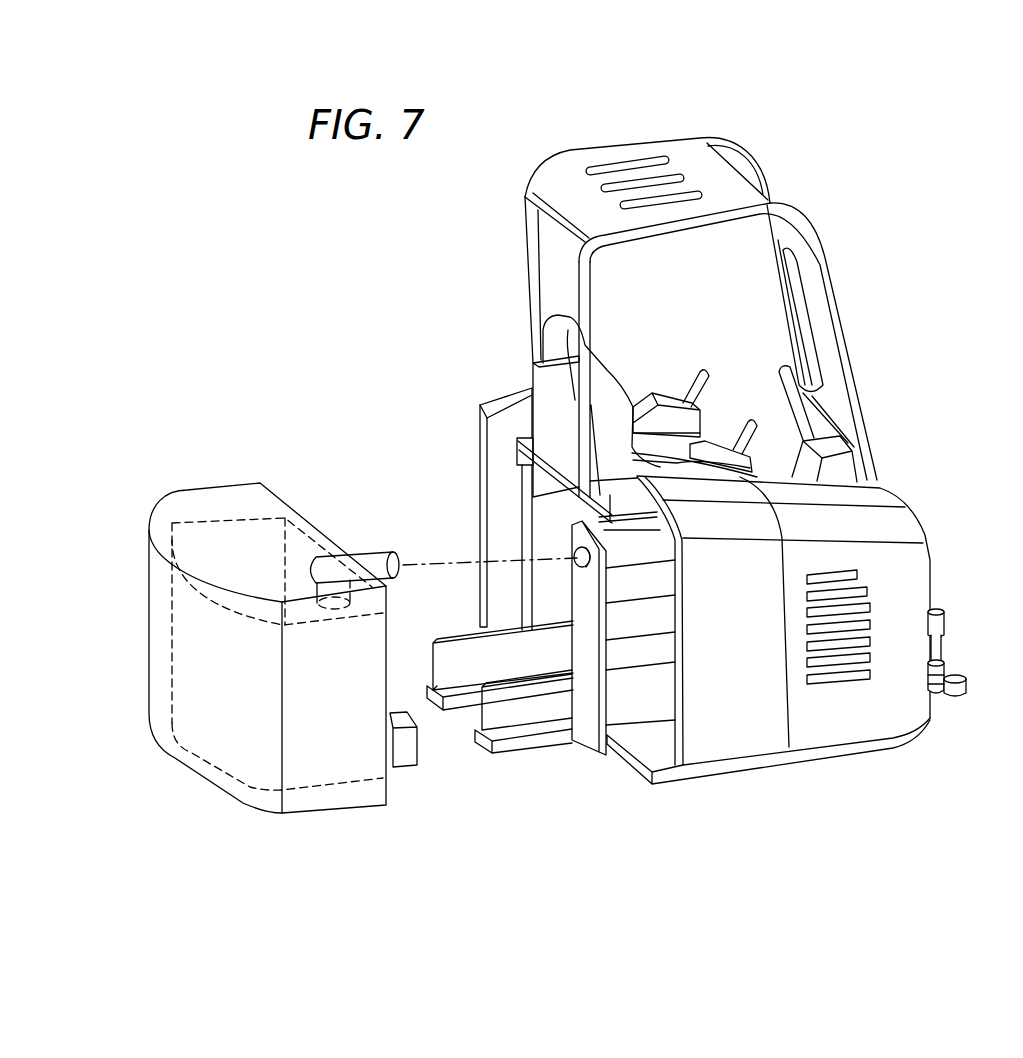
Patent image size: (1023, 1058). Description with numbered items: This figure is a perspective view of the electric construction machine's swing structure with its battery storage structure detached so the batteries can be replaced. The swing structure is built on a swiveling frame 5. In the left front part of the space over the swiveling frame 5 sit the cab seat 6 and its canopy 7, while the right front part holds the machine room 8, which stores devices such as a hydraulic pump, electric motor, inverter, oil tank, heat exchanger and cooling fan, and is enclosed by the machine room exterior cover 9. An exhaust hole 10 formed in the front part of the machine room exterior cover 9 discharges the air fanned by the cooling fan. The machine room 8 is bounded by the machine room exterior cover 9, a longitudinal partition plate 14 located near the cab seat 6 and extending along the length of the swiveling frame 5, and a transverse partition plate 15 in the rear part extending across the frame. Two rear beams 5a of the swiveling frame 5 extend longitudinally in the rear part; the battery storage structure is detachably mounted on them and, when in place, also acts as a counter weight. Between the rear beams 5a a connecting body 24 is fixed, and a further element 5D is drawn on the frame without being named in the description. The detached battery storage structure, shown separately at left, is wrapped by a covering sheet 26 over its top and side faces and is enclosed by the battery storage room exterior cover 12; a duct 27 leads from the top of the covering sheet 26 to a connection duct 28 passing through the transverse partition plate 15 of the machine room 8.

The swiveling frame 5 is at (780, 762).
The rear beams 5a is at (462, 663).
The hinge pin 5D is at (943, 625).
The cab seat 6 is at (605, 351).
The canopy 7 is at (825, 256).
The machine room 8 is at (640, 713).
The machine room exterior cover 9 is at (917, 723).
The exhaust hole 10 is at (867, 588).
The battery storage room exterior cover 12 is at (198, 488).
The longitudinal partition plate 14 is at (608, 501).
The transverse partition plate 15 is at (585, 735).
The connecting body 24 is at (417, 750).
The covering sheet 26 is at (243, 520).
The duct 27 is at (370, 547).
The connection duct 28 is at (577, 547).